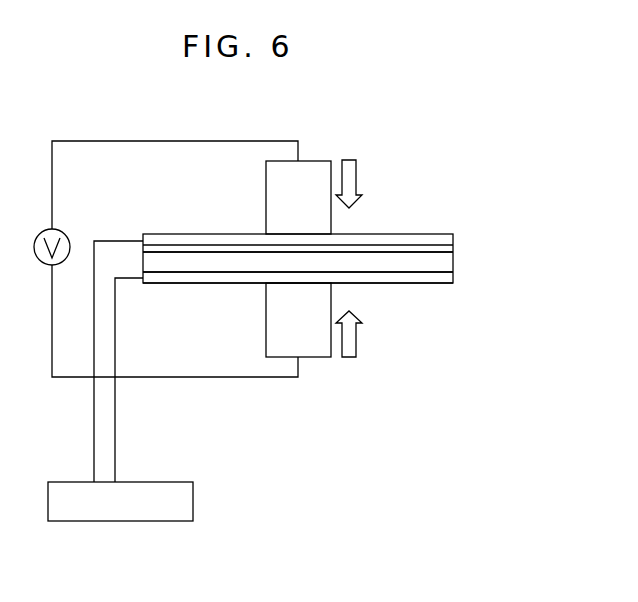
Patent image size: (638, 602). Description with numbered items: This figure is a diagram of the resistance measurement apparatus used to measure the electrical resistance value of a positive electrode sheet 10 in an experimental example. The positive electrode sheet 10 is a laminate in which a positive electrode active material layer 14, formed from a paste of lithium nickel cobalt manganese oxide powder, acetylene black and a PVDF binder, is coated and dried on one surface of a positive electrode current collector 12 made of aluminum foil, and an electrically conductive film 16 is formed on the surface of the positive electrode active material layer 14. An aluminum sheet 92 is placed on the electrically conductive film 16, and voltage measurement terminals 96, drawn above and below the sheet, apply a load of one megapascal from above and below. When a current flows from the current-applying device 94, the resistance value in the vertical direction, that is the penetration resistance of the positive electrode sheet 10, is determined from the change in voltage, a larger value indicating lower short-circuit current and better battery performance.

The positive electrode sheet 10 is at (364, 238).
The positive electrode current collector 12 is at (342, 287).
The positive electrode active material layer 14 is at (455, 262).
The electrically conductive film 16 is at (455, 247).
The aluminum sheet 92 is at (456, 241).
The current-applying device 94 is at (162, 512).
The voltage measurement terminals 96 is at (310, 172).